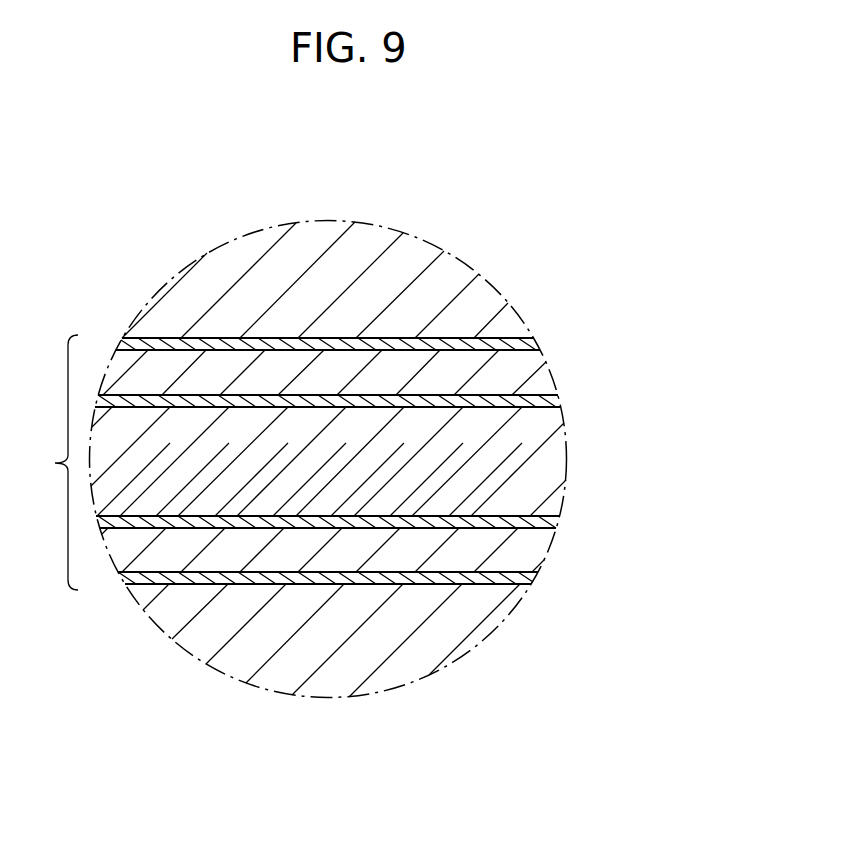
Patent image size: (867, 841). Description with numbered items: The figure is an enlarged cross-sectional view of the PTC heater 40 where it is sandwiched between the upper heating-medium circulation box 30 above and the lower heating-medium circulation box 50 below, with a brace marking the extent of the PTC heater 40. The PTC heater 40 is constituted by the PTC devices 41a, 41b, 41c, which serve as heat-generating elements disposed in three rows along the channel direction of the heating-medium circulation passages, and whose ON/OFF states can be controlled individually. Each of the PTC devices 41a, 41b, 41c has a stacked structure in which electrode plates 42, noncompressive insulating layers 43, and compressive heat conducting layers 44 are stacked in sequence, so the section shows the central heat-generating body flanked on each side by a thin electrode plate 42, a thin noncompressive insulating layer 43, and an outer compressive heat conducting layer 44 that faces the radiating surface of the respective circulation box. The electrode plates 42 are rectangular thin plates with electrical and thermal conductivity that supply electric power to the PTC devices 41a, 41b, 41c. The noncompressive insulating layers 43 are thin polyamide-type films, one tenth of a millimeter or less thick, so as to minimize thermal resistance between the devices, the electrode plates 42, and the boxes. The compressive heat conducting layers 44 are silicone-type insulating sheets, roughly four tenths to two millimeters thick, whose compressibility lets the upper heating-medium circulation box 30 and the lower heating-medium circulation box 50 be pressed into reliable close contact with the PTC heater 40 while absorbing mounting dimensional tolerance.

The upper heating-medium circulation box 30 is at (325, 238).
The PTC heater 40 is at (48, 462).
The PTC device 41a is at (530, 451).
The PTC device 41b is at (328, 461).
The PTC device 41c is at (291, 497).
The electrode plate 42 is at (548, 397).
The noncompressive insulating layer 43 is at (535, 367).
The compressive heat conducting layer 44 is at (476, 333).
The lower heating-medium circulation box 50 is at (350, 682).